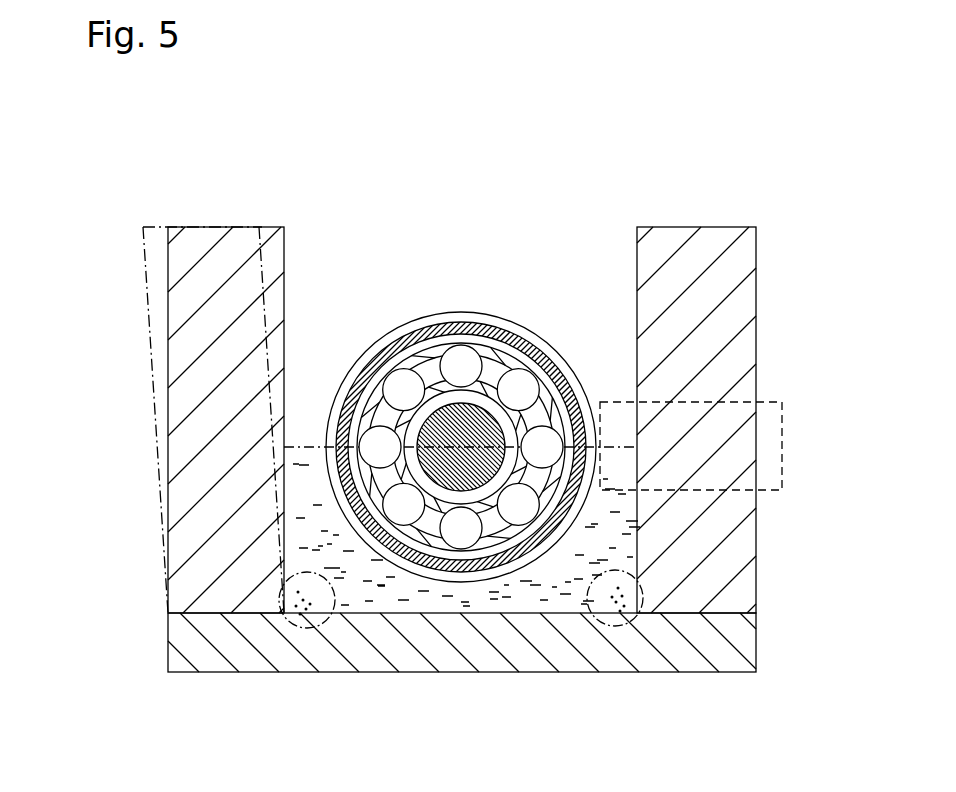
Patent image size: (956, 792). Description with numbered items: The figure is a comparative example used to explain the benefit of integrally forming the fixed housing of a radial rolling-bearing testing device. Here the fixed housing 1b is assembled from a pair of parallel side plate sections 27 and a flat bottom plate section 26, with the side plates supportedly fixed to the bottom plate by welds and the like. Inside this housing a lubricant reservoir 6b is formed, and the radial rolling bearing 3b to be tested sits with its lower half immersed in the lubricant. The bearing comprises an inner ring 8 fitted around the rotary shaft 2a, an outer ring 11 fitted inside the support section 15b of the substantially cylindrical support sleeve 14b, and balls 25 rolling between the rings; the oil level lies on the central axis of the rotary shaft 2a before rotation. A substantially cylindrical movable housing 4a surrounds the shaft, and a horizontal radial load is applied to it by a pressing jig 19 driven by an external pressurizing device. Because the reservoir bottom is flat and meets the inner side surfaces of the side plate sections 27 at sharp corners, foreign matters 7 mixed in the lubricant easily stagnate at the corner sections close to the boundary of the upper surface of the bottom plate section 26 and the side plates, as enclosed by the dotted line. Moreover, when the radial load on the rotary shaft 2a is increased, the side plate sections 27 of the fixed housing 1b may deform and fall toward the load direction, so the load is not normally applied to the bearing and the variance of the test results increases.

The fixed housing 1b is at (538, 445).
The rotary shaft 2a is at (483, 420).
The radial rolling bearing 3b is at (451, 447).
The movable housing 4a is at (454, 309).
The lubricant reservoir 6b is at (533, 603).
The foreign matter 7 is at (590, 602).
The inner ring 8 is at (461, 447).
The outer ring 11 is at (497, 345).
The support sleeve 14b is at (424, 330).
The support section 15b is at (420, 548).
The pressing jig 19 is at (770, 470).
The ball 25 is at (364, 347).
The bottom plate section 26 is at (452, 660).
The side plate section 27 is at (243, 242).